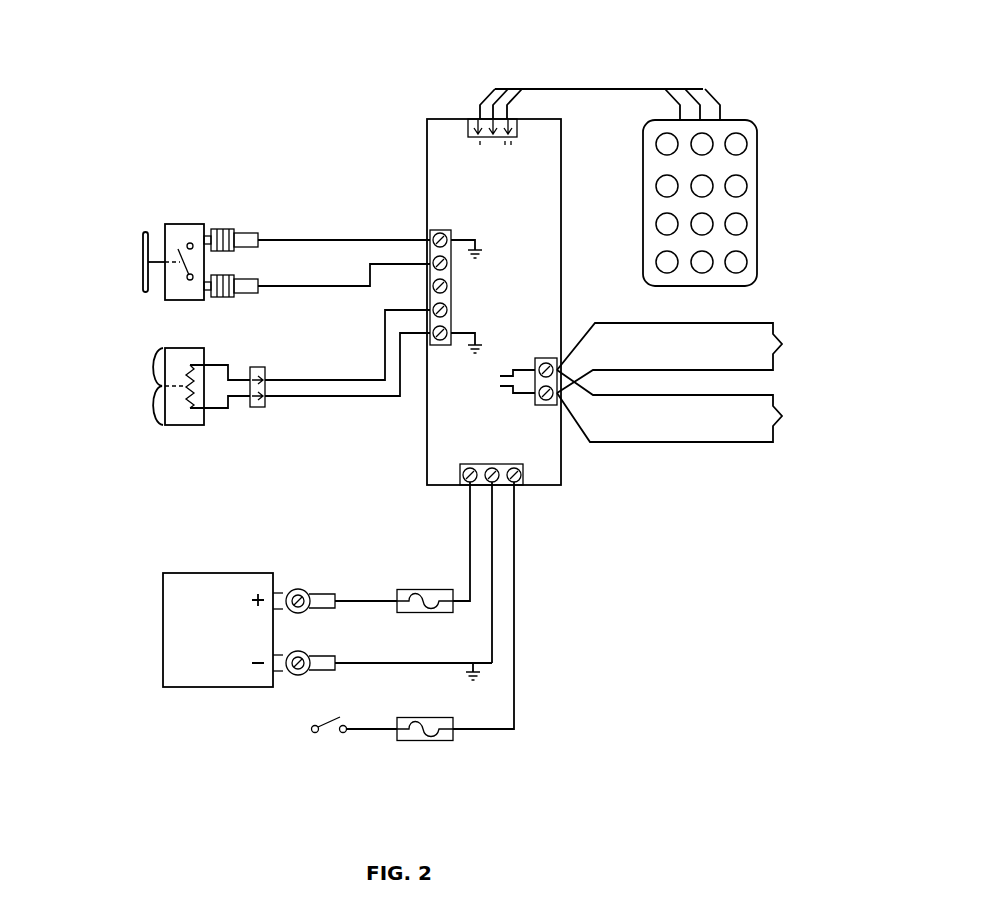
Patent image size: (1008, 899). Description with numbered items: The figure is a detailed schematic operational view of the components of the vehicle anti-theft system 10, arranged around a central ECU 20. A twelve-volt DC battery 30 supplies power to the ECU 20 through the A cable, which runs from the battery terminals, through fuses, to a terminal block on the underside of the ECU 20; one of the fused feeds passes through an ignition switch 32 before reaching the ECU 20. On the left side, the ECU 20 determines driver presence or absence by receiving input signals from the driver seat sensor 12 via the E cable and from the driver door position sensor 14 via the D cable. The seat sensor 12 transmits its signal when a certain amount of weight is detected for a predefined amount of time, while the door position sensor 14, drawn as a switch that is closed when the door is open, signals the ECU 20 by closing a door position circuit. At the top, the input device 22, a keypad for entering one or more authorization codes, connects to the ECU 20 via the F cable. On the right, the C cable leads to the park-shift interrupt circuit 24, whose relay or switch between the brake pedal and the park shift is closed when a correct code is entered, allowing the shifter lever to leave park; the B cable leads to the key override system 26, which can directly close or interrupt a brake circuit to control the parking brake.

The vehicle anti-theft system 10 is at (420, 44).
The driver seat sensor 12 is at (178, 425).
The driver door position sensor 14 is at (175, 300).
The ECU 20 is at (561, 487).
The input device 22 is at (735, 118).
The circuit 24 is at (813, 335).
The key override system 26 is at (793, 420).
The 12V DC battery 30 is at (178, 687).
The ignition switch 32 is at (316, 733).